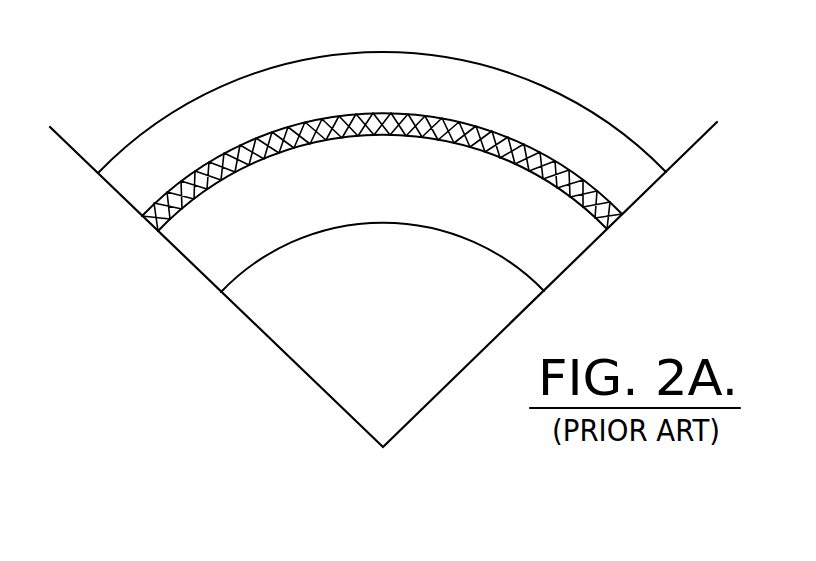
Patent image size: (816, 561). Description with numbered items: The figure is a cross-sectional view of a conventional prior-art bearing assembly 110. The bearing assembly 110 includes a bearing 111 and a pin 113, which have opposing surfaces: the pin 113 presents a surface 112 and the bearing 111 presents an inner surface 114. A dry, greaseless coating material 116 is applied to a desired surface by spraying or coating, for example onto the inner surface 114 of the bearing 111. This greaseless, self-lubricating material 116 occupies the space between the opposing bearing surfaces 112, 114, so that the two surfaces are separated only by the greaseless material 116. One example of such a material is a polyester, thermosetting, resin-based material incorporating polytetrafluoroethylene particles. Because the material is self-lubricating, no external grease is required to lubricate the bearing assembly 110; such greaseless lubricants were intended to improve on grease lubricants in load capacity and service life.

The bearing assembly 110 is at (208, 73).
The bearing 111 is at (140, 185).
The opposing surface of the pin 112 is at (257, 155).
The pin 113 is at (202, 258).
The inner surface of the bearing 114 is at (213, 163).
The greaseless self-lubricating coating material 116 is at (155, 215).